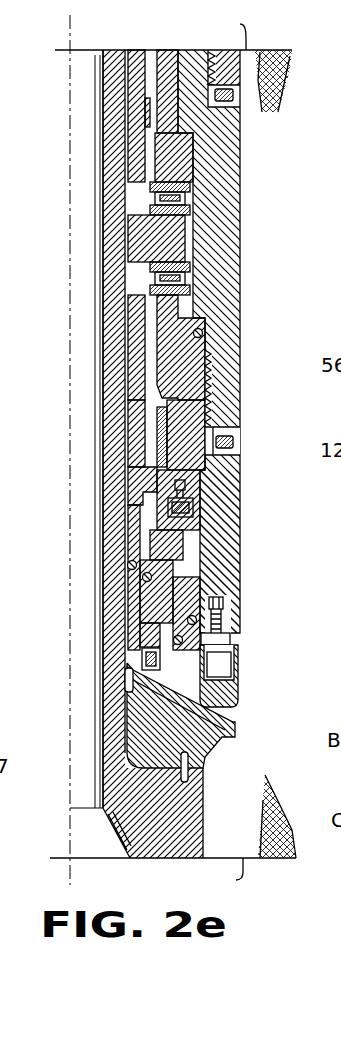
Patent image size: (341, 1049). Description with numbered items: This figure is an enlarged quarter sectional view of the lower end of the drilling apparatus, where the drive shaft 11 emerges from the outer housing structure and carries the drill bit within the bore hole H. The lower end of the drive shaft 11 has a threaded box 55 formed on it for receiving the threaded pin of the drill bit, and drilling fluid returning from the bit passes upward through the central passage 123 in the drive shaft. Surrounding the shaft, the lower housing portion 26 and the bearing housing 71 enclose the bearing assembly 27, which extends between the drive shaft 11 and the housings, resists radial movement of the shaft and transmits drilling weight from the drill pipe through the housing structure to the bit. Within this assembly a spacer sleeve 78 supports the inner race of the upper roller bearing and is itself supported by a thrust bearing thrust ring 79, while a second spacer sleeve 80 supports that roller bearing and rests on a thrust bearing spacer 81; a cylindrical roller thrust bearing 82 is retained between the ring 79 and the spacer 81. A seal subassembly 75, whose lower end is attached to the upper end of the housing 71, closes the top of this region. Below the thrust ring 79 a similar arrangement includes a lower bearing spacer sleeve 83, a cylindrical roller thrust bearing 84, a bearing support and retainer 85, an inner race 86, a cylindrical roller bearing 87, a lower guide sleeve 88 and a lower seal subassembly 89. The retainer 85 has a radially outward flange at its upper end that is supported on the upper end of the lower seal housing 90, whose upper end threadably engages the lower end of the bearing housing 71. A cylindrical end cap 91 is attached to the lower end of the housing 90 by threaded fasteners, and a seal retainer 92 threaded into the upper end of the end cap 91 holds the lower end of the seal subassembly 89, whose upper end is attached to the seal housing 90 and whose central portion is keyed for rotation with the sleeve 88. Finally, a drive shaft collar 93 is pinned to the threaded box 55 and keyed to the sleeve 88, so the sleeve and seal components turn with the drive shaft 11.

The bore hole H is at (233, 452).
The drive shaft 11 is at (107, 210).
The lower housing portion 26 is at (240, 67).
The bearing assembly 27 is at (137, 164).
The threaded box 55 is at (192, 818).
The bearing housing 71 is at (235, 230).
The seal subassembly 75 is at (112, 658).
The spacer sleeve 78 is at (132, 80).
The thrust bearing thrust ring 79 is at (137, 241).
The spacer sleeve 80 is at (164, 52).
The thrust bearing spacer 81 is at (182, 158).
The cylindrical roller thrust bearing 82 is at (183, 197).
The lower bearing spacer sleeve 83 is at (135, 350).
The cylindrical roller thrust bearing 84 is at (185, 277).
The bearing support and retainer 85 is at (185, 301).
The inner race 86 is at (137, 440).
The cylindrical roller bearing 87 is at (178, 418).
The lower guide sleeve 88 is at (137, 490).
The seal subassembly 89 is at (57, 496).
The lower seal housing 90 is at (228, 513).
The cylindrical end cap 91 is at (232, 690).
The seal retainer 92 is at (183, 591).
The drive shaft collar 93 is at (203, 760).
The central passage 123 is at (78, 798).